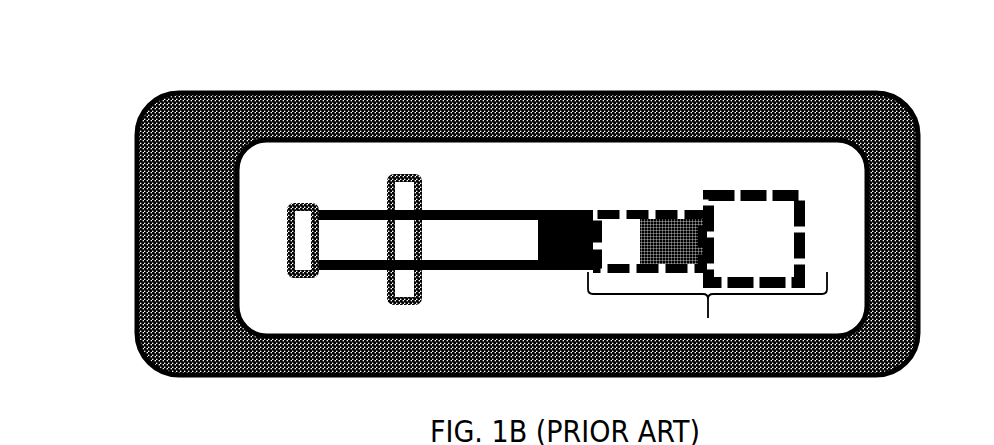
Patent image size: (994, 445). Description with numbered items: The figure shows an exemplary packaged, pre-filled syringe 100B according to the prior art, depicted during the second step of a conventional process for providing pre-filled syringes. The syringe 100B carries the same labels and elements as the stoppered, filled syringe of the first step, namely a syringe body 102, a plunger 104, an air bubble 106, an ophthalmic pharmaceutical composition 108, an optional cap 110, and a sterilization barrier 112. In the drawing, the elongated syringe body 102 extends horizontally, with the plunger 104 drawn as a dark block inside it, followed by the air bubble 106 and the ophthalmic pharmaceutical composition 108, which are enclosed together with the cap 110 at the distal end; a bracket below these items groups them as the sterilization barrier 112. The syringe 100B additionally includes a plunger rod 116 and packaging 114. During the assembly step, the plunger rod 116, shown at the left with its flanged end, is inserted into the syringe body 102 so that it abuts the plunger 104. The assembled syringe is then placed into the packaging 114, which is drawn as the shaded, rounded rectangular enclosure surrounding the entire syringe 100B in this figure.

The packaged, pre-filled syringe 100B is at (98, 83).
The syringe body 102 is at (482, 190).
The plunger 104 is at (562, 219).
The air bubble 106 is at (612, 224).
The ophthalmic pharmaceutical composition 108 is at (674, 220).
The cap 110 is at (760, 230).
The sterilization barrier 112 is at (707, 315).
The packaging 114 is at (527, 234).
The plunger rod 116 is at (415, 239).